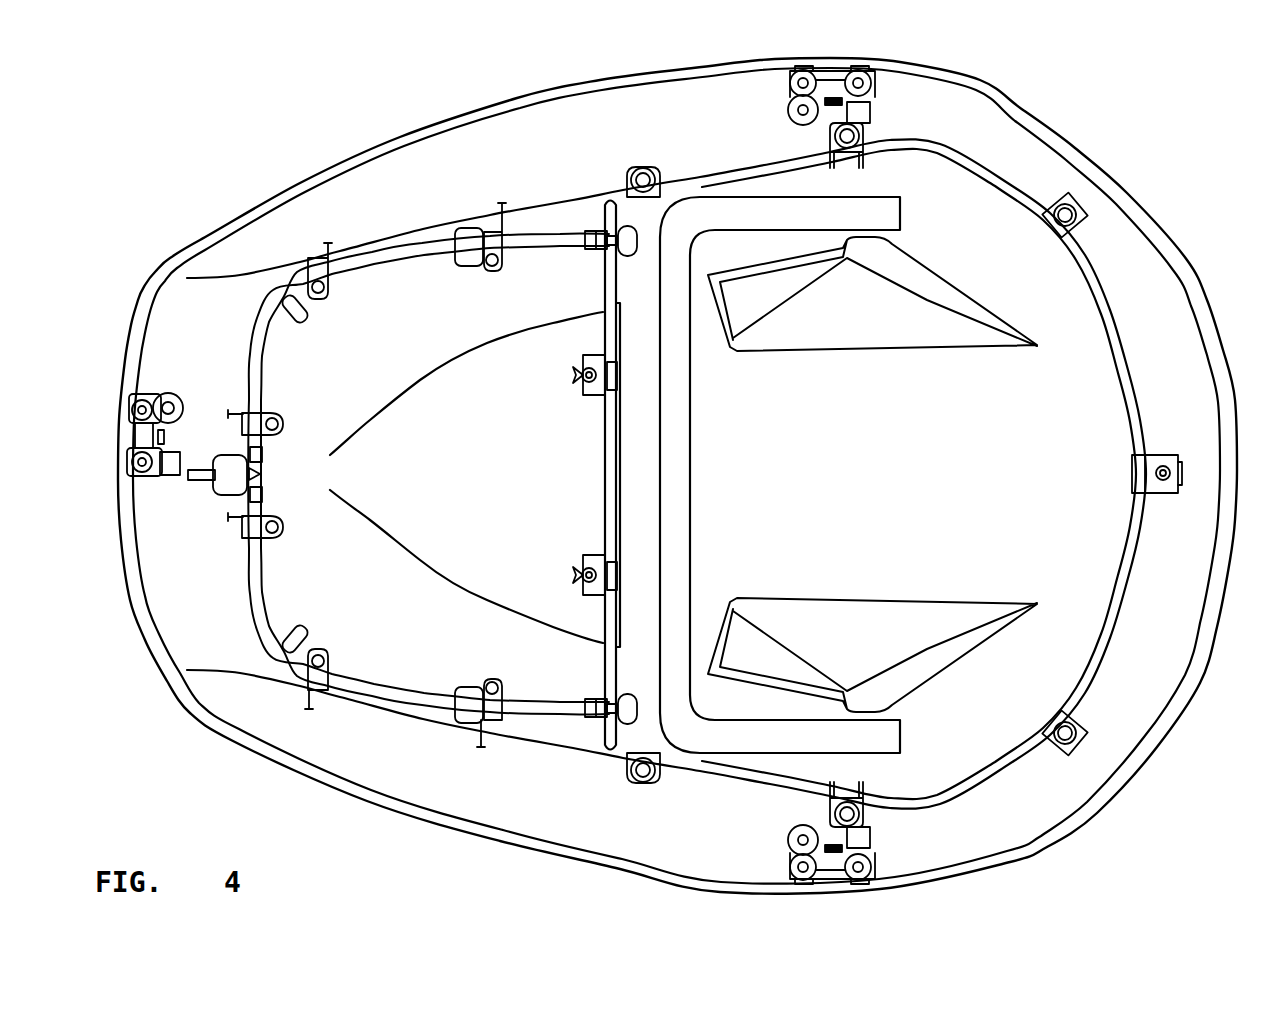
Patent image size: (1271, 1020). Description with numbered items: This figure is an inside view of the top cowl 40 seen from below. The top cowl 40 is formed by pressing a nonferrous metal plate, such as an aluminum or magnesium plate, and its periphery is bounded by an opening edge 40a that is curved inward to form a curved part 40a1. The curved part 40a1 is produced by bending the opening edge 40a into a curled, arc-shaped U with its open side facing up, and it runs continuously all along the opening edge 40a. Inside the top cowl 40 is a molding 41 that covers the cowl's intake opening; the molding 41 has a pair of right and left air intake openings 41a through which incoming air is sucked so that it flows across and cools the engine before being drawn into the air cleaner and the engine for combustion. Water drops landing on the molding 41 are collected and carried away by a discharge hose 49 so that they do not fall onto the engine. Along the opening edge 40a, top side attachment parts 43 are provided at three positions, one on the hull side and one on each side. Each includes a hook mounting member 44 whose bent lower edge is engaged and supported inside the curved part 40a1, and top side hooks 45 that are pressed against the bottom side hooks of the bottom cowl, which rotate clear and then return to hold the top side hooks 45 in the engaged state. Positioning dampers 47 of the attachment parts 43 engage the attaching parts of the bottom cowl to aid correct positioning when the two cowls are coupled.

The top cowl 40 is at (677, 482).
The opening edge 40a is at (996, 874).
The curved part 40a1 is at (1067, 822).
The molding 41 is at (1073, 307).
The air intake openings 41a is at (800, 315).
The top side attachment parts 43 is at (190, 388).
The hook mounting member 44 is at (128, 437).
The top side hooks 45 is at (170, 476).
The positioning dampers 47 is at (155, 395).
The discharge hose 49 is at (407, 247).